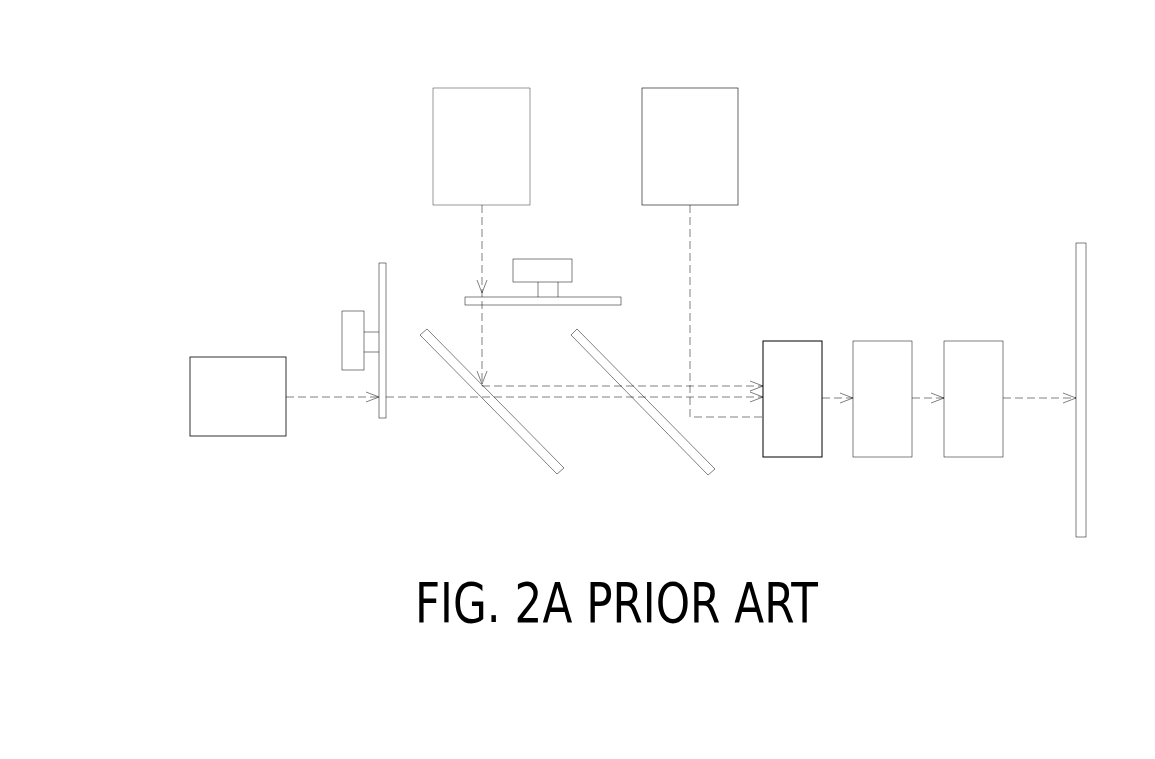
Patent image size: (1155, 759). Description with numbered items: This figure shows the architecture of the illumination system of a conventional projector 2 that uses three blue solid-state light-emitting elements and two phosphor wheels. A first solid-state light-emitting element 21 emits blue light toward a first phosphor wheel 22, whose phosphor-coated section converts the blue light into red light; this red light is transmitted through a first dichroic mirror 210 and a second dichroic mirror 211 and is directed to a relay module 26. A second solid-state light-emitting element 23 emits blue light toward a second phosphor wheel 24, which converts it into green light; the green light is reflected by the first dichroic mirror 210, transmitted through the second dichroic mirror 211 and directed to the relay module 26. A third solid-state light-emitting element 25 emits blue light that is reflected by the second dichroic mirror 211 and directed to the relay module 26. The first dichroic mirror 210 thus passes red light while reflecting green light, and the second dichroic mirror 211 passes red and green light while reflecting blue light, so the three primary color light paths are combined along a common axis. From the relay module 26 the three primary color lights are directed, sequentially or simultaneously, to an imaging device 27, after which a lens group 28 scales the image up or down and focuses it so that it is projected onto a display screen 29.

The projector 2 is at (336, 142).
The first solid-state light-emitting element 21 is at (218, 357).
The first phosphor wheel 22 is at (381, 263).
The second solid-state light-emitting element 23 is at (463, 88).
The second phosphor wheel 24 is at (585, 301).
The third solid-state light-emitting element 25 is at (673, 88).
The relay module 26 is at (785, 341).
The imaging device 27 is at (875, 341).
The lens group 28 is at (967, 341).
The display screen 29 is at (1082, 243).
The first dichroic mirror 210 is at (532, 443).
The second dichroic mirror 211 is at (683, 443).